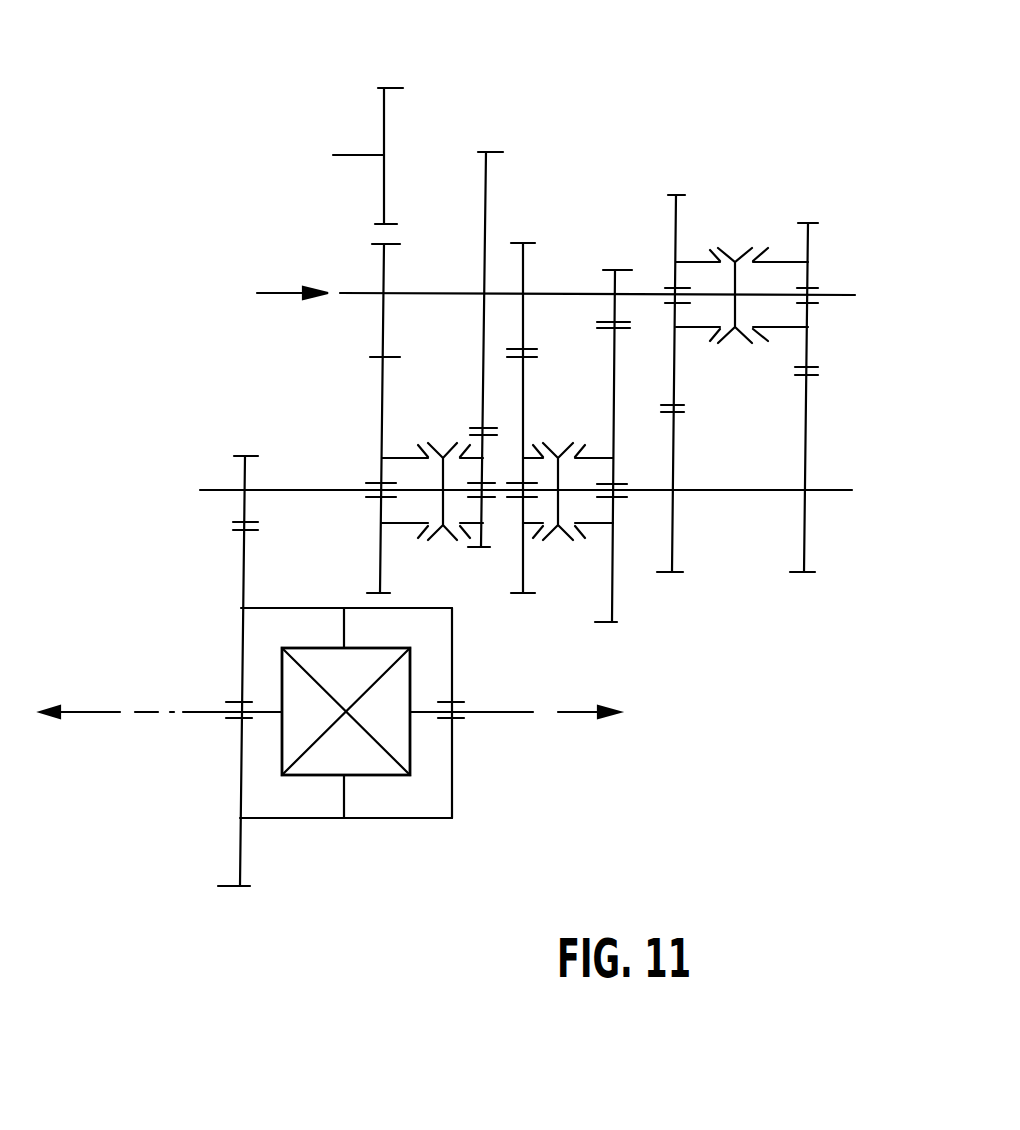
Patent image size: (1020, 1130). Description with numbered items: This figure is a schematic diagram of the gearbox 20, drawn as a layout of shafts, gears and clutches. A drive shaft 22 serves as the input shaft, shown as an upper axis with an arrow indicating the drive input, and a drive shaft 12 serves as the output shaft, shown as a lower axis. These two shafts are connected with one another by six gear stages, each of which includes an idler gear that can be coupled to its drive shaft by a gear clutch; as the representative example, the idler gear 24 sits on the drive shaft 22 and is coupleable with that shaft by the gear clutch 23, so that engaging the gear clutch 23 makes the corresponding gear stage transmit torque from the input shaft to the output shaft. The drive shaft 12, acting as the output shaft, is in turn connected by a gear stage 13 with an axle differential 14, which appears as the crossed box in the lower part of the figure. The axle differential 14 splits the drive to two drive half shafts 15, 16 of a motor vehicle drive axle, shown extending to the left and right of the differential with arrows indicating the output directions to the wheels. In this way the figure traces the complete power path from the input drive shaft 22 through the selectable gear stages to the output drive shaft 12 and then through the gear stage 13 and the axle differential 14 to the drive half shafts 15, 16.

The drive shaft 12 is at (822, 490).
The gear stage 13 is at (246, 443).
The axle differential 14 is at (452, 787).
The drive half shaft 15 is at (198, 712).
The drive half shaft 16 is at (533, 712).
The gearbox 20 is at (637, 115).
The drive shaft 22 is at (828, 292).
The gear clutch 23 is at (737, 348).
The idler gear 24 is at (680, 228).